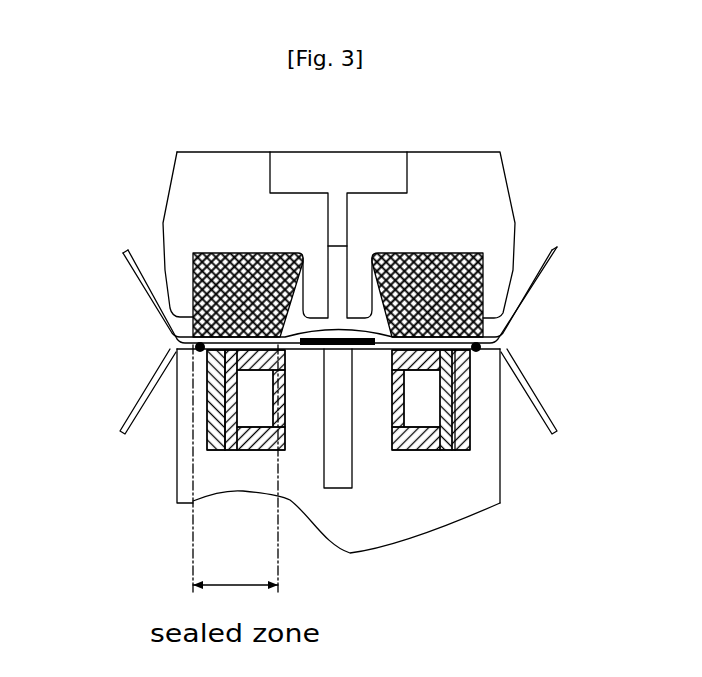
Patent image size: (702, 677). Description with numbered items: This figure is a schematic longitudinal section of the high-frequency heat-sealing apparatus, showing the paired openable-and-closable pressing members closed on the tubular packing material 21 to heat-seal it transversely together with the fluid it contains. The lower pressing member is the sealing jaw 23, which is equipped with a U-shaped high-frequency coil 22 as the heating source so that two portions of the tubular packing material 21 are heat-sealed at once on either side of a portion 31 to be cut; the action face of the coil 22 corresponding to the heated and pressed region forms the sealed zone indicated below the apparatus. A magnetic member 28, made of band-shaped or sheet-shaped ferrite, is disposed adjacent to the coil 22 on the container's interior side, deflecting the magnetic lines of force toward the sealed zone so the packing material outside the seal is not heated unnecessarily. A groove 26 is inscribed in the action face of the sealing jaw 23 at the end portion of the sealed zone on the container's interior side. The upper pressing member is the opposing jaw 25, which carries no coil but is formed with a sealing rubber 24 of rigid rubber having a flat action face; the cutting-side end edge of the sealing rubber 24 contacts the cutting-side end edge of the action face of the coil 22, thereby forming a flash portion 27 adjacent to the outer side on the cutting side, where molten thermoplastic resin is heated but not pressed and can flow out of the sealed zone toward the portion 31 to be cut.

The tubular packing material 21 is at (118, 427).
The high-frequency coil 22 is at (438, 450).
The sealing jaw 23 is at (146, 522).
The sealing rubber 24 is at (192, 277).
The opposing jaw 25 is at (166, 145).
The groove 26 is at (483, 357).
The flash portion 27 is at (373, 349).
The magnetic member 28 is at (468, 450).
The portion to be cut 31 is at (335, 489).